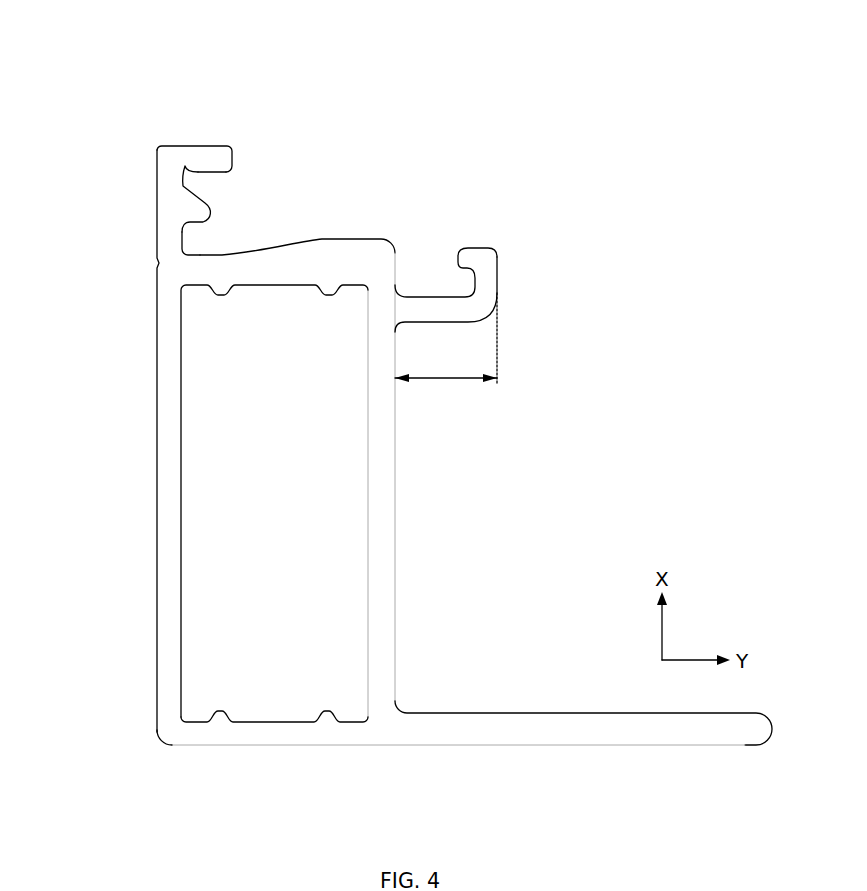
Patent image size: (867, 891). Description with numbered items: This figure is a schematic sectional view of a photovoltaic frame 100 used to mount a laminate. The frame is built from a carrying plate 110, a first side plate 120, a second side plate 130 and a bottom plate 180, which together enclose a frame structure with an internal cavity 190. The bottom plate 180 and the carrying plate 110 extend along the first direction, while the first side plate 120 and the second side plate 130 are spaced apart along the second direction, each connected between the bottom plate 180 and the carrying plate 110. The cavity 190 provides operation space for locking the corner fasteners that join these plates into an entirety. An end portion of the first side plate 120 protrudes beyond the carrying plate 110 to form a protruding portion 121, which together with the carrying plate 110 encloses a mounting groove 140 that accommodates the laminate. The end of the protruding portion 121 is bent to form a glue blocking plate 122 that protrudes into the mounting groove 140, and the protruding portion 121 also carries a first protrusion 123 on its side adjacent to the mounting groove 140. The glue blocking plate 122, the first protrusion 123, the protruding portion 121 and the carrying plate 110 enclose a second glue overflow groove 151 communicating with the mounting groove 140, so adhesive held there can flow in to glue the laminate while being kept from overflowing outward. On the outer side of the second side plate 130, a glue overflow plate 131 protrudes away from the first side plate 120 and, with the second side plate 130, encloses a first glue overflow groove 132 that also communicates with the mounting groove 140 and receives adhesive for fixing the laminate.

The photovoltaic frame 100 is at (148, 48).
The carrying plate 110 is at (298, 265).
The first side plate 120 is at (165, 530).
The protruding portion 121 is at (170, 238).
The glue blocking plate 122 is at (213, 153).
The first protrusion 123 is at (193, 212).
The second side plate 130 is at (385, 538).
The glue overflow plate 131 is at (480, 293).
The first glue overflow groove 132 is at (442, 272).
The mounting groove 140 is at (268, 191).
The second glue overflow groove 151 is at (205, 176).
The bottom plate 180 is at (273, 733).
The cavity 190 is at (213, 627).